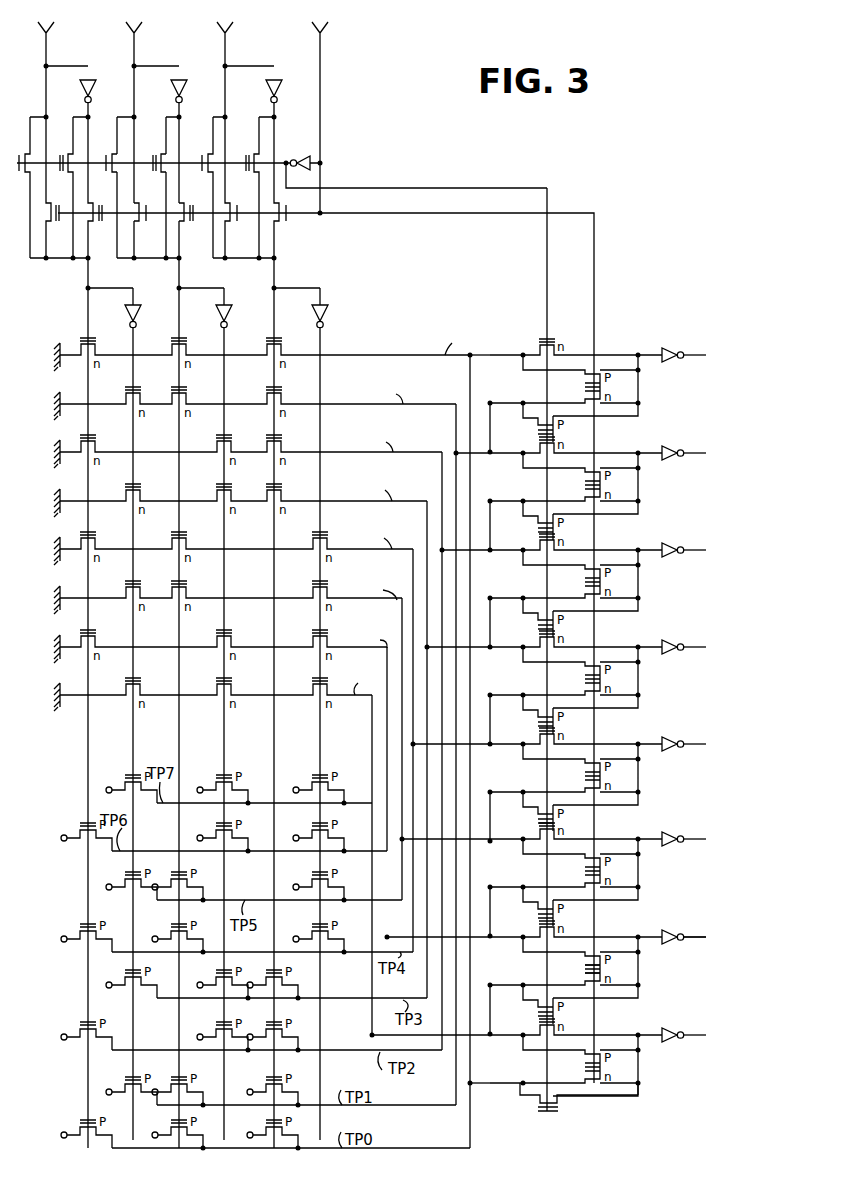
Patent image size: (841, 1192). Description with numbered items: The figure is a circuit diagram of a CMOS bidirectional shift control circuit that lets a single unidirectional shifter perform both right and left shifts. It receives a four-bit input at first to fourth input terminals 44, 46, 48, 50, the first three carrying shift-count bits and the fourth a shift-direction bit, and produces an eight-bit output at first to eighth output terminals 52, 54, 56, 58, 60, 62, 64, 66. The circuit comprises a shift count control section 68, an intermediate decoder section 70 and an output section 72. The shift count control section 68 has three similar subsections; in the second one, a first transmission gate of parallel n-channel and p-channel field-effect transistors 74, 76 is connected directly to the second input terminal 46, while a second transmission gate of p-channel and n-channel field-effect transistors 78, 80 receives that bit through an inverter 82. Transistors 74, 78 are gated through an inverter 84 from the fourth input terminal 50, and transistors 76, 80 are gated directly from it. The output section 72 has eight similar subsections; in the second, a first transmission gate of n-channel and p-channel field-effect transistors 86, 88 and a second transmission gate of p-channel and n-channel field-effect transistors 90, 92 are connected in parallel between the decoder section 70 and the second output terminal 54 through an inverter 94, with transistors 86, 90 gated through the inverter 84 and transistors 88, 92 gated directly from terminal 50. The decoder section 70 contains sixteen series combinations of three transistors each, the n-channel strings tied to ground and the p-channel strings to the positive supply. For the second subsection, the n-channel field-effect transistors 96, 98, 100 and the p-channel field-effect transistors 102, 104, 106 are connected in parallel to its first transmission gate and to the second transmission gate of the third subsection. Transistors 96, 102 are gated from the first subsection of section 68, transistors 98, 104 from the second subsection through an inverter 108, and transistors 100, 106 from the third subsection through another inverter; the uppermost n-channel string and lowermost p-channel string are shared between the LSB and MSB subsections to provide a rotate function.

The first input terminal 44 is at (48, 52).
The second input terminal 46 is at (136, 52).
The third input terminal 48 is at (227, 52).
The fourth input terminal 50 is at (322, 52).
The first output terminal 52 is at (700, 1037).
The second output terminal 54 is at (700, 939).
The third output terminal 56 is at (700, 841).
The fourth output terminal 58 is at (700, 746).
The fifth output terminal 60 is at (700, 649).
The sixth output terminal 62 is at (700, 552).
The seventh output terminal 64 is at (700, 455).
The eighth output terminal 66 is at (700, 357).
The shift count control section 68 is at (350, 123).
The intermediate decoder section 70 is at (352, 338).
The output section 72 is at (612, 322).
The n-channel field-effect transistor 74 is at (107, 148).
The p-channel field-effect transistor 76 is at (151, 224).
The p-channel field-effect transistor 78 is at (157, 146).
The n-channel field-effect transistor 80 is at (190, 230).
The inverter 82 is at (192, 82).
The inverter 84 is at (298, 150).
The n-channel field-effect transistor 86 is at (534, 920).
The p-channel field-effect transistor 88 is at (622, 958).
The p-channel field-effect transistor 90 is at (527, 975).
The n-channel field-effect transistor 92 is at (622, 979).
The inverter 94 is at (678, 928).
The n-channel field-effect transistor 96 is at (100, 642).
The n-channel field-effect transistor 98 is at (240, 642).
The n-channel field-effect transistor 100 is at (336, 640).
The p-channel field-effect transistor 102 is at (74, 820).
The p-channel field-effect transistor 104 is at (256, 869).
The p-channel field-effect transistor 106 is at (311, 858).
The inverter 108 is at (234, 322).